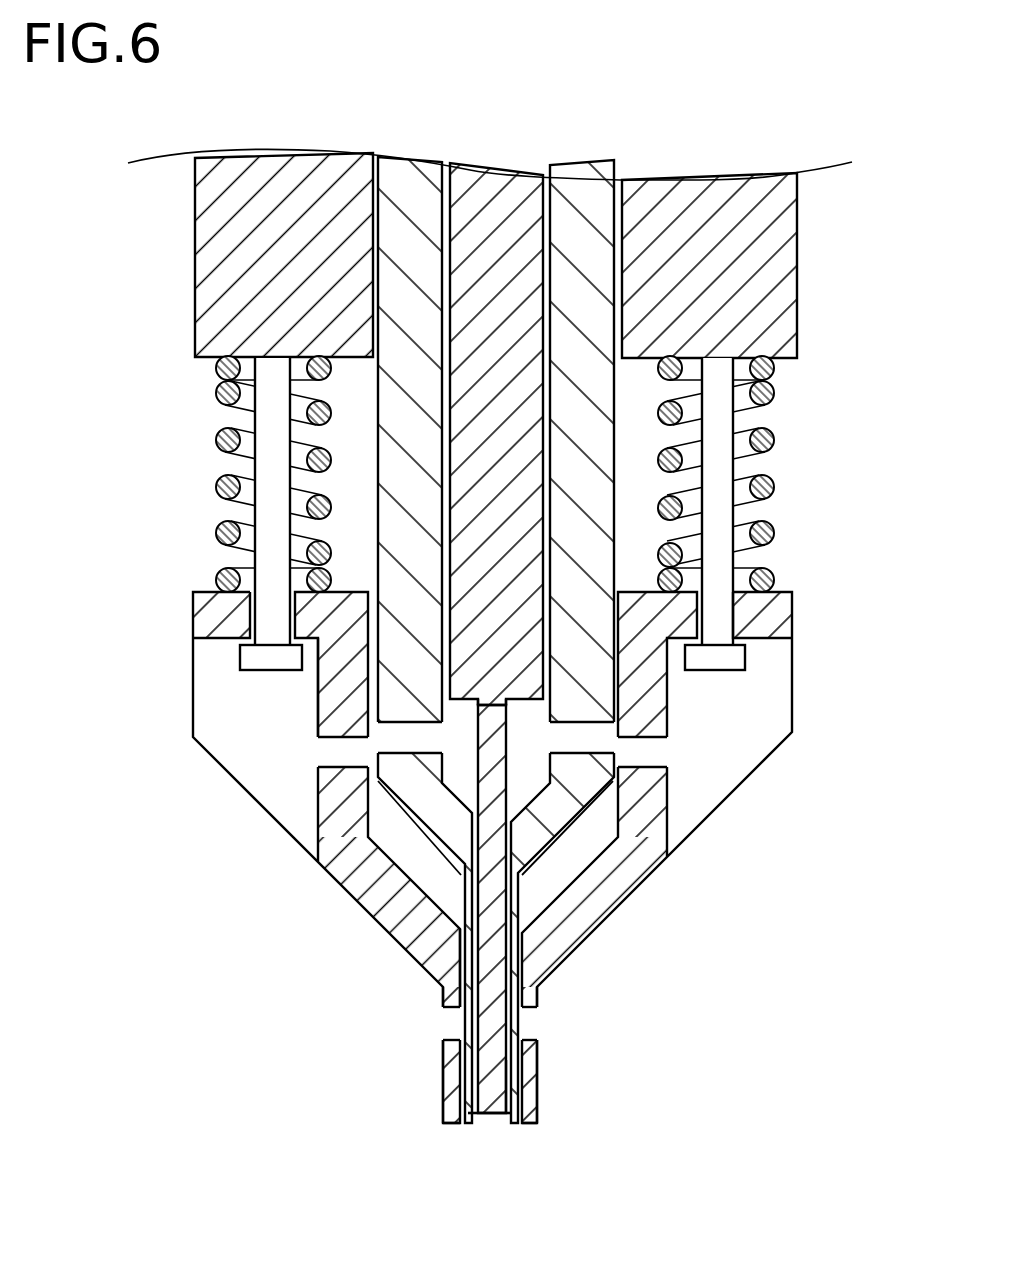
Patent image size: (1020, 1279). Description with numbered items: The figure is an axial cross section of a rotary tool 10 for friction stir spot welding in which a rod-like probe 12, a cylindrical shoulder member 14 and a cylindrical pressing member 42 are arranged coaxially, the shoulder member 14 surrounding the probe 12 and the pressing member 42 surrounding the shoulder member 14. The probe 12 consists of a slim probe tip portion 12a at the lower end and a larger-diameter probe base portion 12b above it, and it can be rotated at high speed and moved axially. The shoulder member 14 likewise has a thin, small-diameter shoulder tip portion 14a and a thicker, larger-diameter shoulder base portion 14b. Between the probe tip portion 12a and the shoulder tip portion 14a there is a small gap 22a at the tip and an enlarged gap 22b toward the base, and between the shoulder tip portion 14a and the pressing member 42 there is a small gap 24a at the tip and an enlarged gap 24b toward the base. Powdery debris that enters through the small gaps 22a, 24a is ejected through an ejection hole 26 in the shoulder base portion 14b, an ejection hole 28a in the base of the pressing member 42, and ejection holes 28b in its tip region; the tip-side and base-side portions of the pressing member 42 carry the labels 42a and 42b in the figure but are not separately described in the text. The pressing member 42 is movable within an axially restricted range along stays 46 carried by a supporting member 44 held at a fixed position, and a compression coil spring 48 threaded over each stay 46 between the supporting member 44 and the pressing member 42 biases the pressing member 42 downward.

The rotary tool for friction stir spot welding 10 is at (262, 894).
The probe 12 is at (530, 168).
The probe tip portion 12a is at (493, 792).
The probe base portion 12b is at (495, 205).
The shoulder member 14 is at (618, 287).
The shoulder tip portion 14a is at (513, 947).
The shoulder base portion 14b is at (408, 188).
The small gap 22a is at (478, 1114).
The enlarged gap 22b is at (503, 1070).
The small gap 24a is at (507, 1114).
The enlarged gap 24b is at (462, 972).
The ejection hole 26 is at (575, 724).
The ejection hole 28a is at (342, 760).
The ejection holes 28b is at (525, 1035).
The pressing member 42 is at (652, 882).
The sleeve portion of housing 42a is at (448, 1077).
The wall portion of housing 42b is at (333, 707).
The supporting member 44 is at (237, 252).
The stay 46 is at (272, 512).
The compression coil spring 48 is at (222, 437).